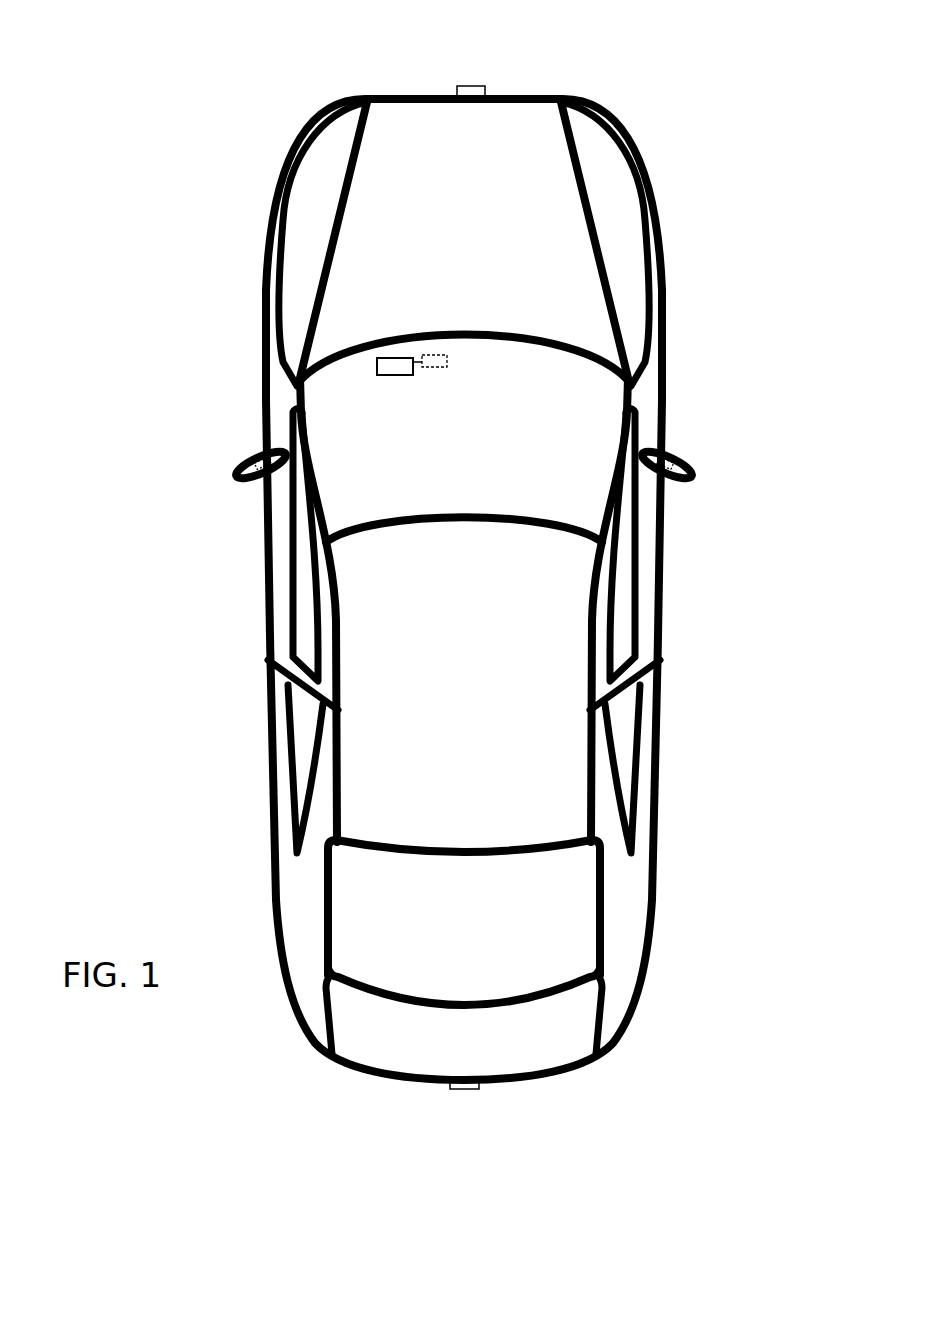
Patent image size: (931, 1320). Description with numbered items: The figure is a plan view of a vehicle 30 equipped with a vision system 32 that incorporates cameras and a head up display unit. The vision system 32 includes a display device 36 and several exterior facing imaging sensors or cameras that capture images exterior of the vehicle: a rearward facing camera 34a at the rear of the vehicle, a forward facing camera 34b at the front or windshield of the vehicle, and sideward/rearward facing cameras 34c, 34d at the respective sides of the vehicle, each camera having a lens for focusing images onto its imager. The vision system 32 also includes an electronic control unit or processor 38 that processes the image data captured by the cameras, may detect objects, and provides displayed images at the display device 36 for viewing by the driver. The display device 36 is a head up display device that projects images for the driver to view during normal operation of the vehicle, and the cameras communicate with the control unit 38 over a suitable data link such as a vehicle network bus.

The vehicle 30 is at (211, 175).
The vision system 32 is at (463, 313).
The rearward facing camera 34a is at (469, 1089).
The forward facing camera 34b is at (473, 86).
The sideward/rearward facing camera 34c is at (251, 457).
The sideward/rearward facing camera 34d is at (675, 458).
The display device 36 is at (393, 362).
The electronic control unit 38 is at (425, 353).